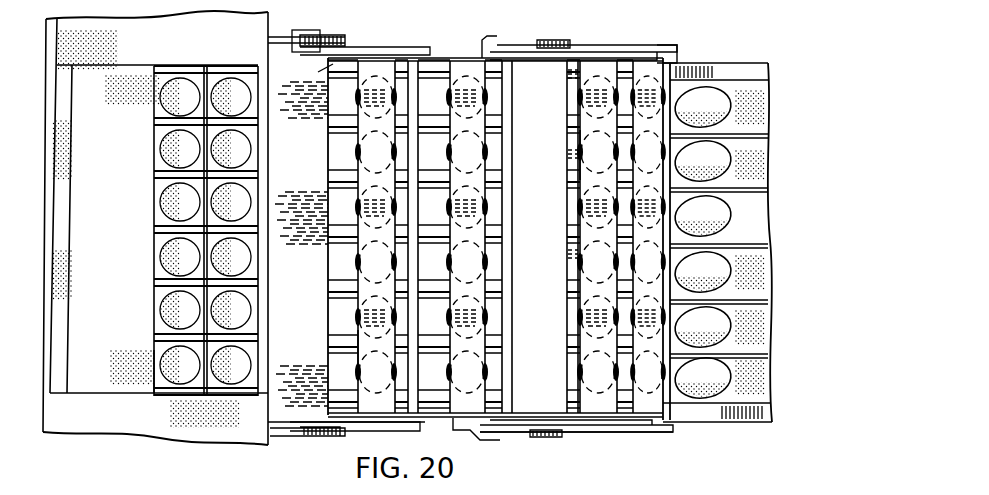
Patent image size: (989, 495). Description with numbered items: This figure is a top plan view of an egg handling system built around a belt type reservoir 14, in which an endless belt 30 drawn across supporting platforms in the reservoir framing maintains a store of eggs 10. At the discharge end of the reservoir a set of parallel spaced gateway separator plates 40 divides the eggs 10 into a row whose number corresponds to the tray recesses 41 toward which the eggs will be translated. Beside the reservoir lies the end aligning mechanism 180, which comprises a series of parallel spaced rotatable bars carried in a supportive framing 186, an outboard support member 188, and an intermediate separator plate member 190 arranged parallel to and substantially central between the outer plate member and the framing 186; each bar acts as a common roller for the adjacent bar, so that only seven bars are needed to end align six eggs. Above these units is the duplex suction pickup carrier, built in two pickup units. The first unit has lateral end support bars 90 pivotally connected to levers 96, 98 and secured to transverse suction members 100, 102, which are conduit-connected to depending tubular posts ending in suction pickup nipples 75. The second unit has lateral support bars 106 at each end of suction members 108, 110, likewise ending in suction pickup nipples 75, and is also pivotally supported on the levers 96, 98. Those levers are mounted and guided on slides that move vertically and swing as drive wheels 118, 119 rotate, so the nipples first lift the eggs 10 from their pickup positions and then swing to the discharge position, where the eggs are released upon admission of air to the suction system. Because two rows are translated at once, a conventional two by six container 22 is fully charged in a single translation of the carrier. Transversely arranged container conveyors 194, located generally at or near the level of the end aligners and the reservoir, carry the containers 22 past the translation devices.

The eggs 10 is at (713, 370).
The belt type reservoir 14 is at (752, 60).
The container 22 is at (150, 368).
The belt 30 is at (755, 100).
The gateway separator plates 40 is at (737, 247).
The tray recesses 41 is at (154, 205).
The suction pickup nipples 75 is at (487, 203).
The lateral end support bars 90 is at (566, 58).
The lever 96 is at (318, 30).
The lever 98 is at (515, 428).
The transverse suction member 100 is at (502, 98).
The transverse suction member 102 is at (585, 275).
The lateral support bars 106 is at (668, 62).
The suction member 108 is at (356, 338).
The suction member 110 is at (635, 335).
The drive wheel 118 is at (280, 38).
The drive wheel 119 is at (556, 40).
The end aligning mechanism 180 is at (512, 150).
The supportive framing 186 is at (340, 58).
The outboard support member 188 is at (505, 334).
The intermediate separator plate member 190 is at (415, 206).
The container conveyors 194 is at (175, 415).